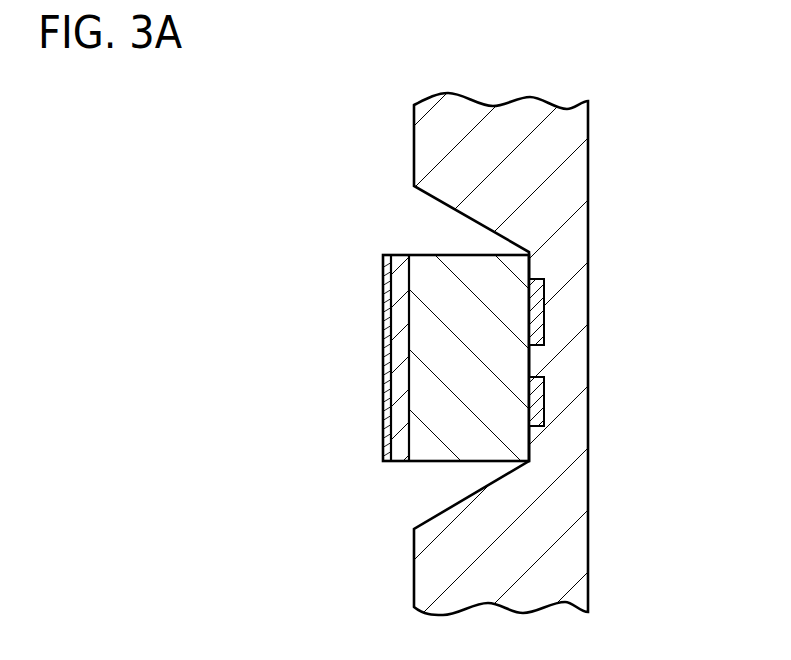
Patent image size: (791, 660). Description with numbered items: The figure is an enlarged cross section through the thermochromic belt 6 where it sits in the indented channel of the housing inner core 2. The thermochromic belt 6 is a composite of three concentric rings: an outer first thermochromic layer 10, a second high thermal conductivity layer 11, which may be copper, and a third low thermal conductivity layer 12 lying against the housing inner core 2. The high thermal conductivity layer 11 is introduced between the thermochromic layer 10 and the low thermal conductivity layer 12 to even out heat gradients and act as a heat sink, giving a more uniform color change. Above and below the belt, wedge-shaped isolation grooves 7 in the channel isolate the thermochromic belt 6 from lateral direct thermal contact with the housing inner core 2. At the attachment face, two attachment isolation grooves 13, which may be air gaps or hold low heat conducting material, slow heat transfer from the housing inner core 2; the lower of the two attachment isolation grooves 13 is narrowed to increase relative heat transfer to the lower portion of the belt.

The housing inner core 2 is at (498, 166).
The thermochromic belt 6 is at (367, 355).
The isolation grooves 7 is at (430, 227).
The thermochromic layer 10 is at (382, 323).
The high thermal conductivity layer 11 is at (400, 254).
The low thermal conductivity layer 12 is at (453, 375).
The attachment isolation grooves 13 is at (547, 308).